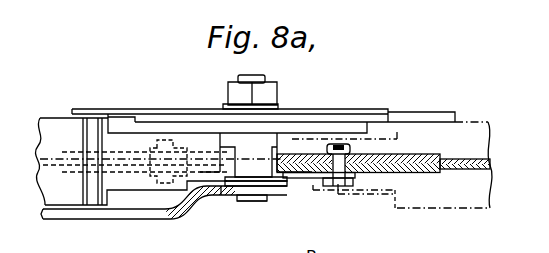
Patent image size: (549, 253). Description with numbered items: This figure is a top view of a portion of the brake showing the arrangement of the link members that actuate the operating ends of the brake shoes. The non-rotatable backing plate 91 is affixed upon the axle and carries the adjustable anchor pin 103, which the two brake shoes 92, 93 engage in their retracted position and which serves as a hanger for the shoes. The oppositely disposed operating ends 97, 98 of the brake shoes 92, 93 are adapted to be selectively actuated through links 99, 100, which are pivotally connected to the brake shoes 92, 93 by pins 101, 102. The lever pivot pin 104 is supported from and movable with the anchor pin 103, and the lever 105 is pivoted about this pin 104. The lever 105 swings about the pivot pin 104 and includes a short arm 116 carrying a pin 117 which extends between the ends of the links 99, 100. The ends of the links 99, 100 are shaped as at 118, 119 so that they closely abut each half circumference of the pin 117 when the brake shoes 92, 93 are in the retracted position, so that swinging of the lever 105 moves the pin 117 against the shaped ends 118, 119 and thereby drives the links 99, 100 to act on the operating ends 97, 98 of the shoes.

The backing plate 91 is at (381, 110).
The brake shoe 92 is at (460, 208).
The brake shoe 93 is at (68, 207).
The operating end 97 is at (140, 171).
The operating end 98 is at (353, 168).
The link 99 is at (220, 196).
The link 100 is at (303, 181).
The pin 101 is at (338, 188).
The pin 102 is at (167, 183).
The adjustable anchor pin 103 is at (258, 153).
The lever pivot pin 104 is at (248, 201).
The lever 105 is at (101, 222).
The short arm 116 is at (291, 197).
The pin 117 is at (253, 178).
The shaped link end 118 is at (267, 201).
The shaped link end 119 is at (221, 196).